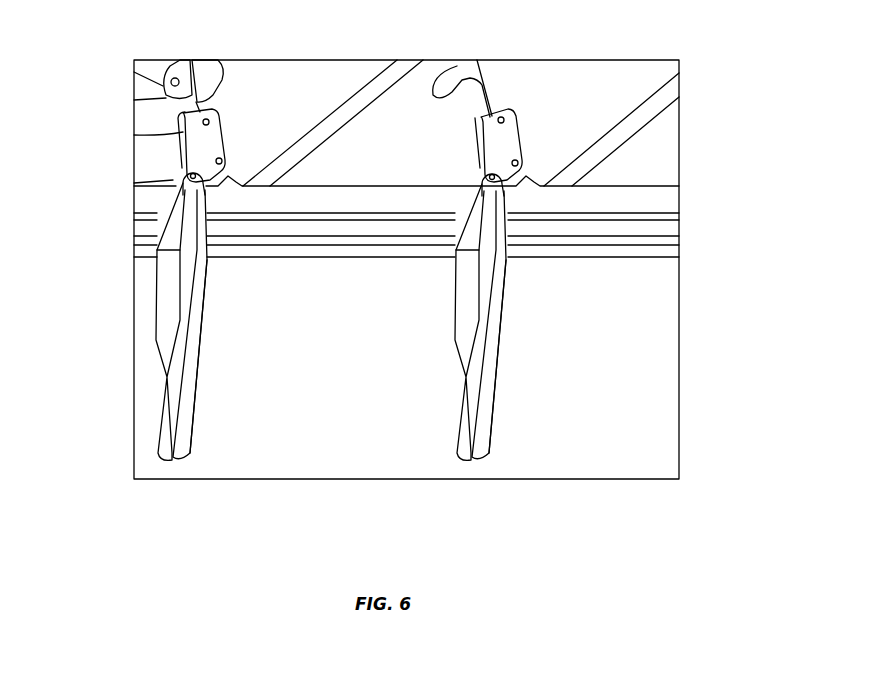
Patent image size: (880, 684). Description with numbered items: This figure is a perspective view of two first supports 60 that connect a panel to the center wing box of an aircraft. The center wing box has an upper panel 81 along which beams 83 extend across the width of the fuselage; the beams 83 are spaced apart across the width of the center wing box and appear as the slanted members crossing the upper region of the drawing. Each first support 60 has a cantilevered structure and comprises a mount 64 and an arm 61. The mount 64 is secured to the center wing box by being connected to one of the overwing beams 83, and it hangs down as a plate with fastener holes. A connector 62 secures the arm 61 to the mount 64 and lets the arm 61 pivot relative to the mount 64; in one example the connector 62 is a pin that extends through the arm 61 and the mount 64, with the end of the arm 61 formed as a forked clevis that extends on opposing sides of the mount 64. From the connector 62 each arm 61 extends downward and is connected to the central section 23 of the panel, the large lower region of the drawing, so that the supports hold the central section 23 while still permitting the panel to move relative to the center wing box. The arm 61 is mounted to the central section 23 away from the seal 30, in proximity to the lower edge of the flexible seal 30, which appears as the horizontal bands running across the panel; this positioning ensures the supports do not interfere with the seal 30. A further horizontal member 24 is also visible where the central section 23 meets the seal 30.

The central section 23 is at (663, 320).
The sill rail 24 is at (663, 203).
The first seal 30 is at (663, 232).
The first support 60 is at (227, 287).
The arm 61 is at (185, 421).
The connector 62 is at (178, 182).
The mount 64 is at (183, 133).
The upper panel 81 is at (663, 155).
The beams 83 is at (270, 95).